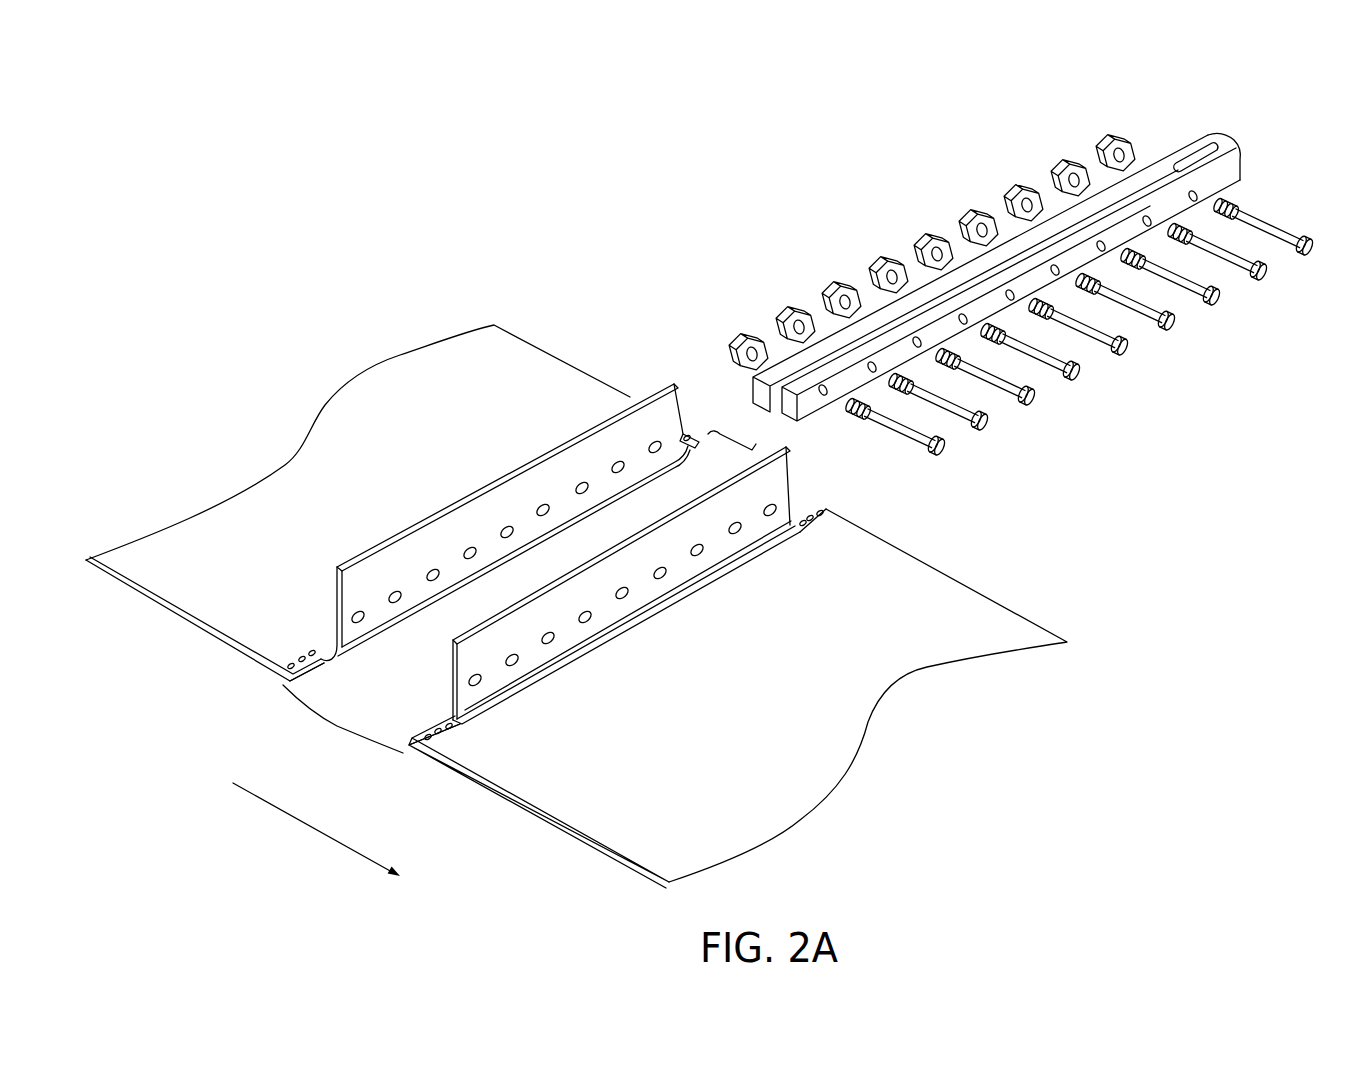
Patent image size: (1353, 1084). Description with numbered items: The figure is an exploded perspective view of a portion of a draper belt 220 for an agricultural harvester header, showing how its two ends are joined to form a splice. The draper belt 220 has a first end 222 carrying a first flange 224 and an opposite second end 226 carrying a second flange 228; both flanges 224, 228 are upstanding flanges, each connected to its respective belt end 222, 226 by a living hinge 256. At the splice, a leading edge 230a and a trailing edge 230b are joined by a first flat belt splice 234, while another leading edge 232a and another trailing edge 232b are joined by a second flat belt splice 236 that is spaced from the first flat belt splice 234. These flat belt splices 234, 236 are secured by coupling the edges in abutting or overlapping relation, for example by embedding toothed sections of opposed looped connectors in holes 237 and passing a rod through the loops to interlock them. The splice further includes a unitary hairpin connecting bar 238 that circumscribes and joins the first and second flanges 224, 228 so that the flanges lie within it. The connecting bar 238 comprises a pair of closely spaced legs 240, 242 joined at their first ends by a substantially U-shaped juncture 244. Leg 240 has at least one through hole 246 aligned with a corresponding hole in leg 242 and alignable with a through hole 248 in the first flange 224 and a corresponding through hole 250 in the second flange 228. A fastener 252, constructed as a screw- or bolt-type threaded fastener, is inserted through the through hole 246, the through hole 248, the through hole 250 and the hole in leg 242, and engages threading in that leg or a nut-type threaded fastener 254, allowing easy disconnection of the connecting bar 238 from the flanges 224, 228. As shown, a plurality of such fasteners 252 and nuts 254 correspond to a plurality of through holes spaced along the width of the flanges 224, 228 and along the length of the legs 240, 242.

The draper belt 220 is at (498, 233).
The first end 222 is at (928, 548).
The first flange 224 is at (449, 677).
The second end 226 is at (579, 358).
The second flange 228 is at (337, 578).
The leading edge 230a is at (441, 762).
The trailing edge 230b is at (271, 672).
The leading edge 232a is at (840, 506).
The trailing edge 232b is at (689, 430).
The first flat belt splice 234 is at (343, 725).
The second flat belt splice 236 is at (740, 435).
The holes 237 is at (686, 434).
The unitary hairpin connecting bar 238 is at (1252, 120).
The leg 240 is at (1000, 305).
The leg 242 is at (970, 268).
The U-shaped juncture 244 is at (1244, 152).
The through hole 246 is at (1146, 216).
The through hole 248 is at (737, 532).
The through hole 250 is at (620, 470).
The fastener 252 is at (1284, 231).
The nut-type threaded fastener 254 is at (1019, 197).
The living hinge 256 is at (367, 647).